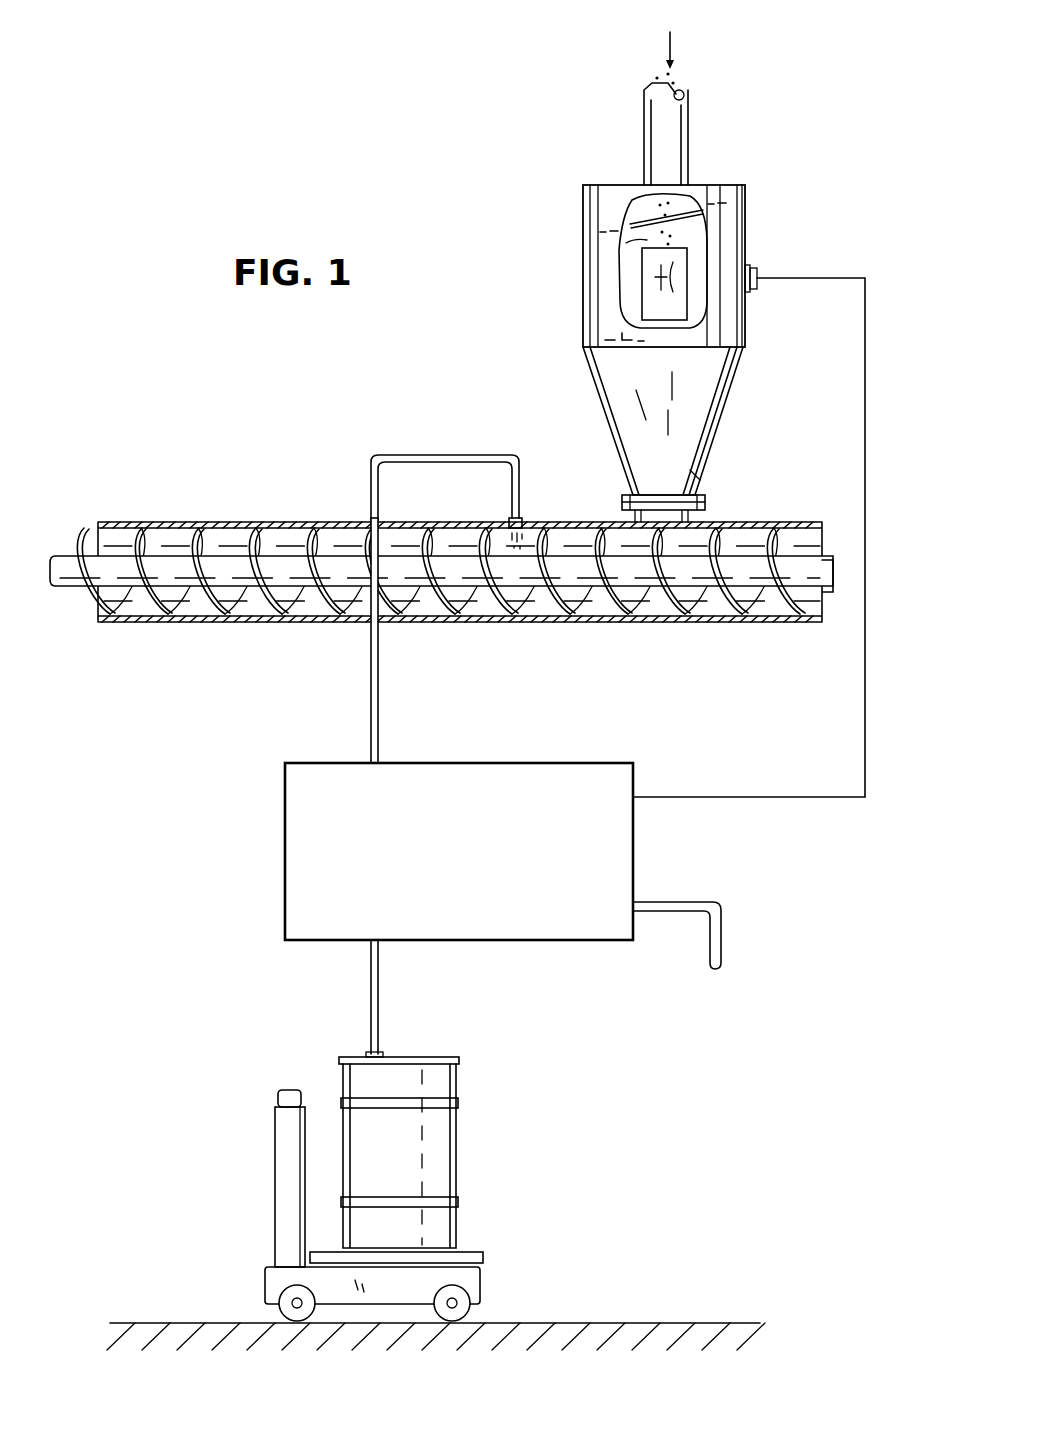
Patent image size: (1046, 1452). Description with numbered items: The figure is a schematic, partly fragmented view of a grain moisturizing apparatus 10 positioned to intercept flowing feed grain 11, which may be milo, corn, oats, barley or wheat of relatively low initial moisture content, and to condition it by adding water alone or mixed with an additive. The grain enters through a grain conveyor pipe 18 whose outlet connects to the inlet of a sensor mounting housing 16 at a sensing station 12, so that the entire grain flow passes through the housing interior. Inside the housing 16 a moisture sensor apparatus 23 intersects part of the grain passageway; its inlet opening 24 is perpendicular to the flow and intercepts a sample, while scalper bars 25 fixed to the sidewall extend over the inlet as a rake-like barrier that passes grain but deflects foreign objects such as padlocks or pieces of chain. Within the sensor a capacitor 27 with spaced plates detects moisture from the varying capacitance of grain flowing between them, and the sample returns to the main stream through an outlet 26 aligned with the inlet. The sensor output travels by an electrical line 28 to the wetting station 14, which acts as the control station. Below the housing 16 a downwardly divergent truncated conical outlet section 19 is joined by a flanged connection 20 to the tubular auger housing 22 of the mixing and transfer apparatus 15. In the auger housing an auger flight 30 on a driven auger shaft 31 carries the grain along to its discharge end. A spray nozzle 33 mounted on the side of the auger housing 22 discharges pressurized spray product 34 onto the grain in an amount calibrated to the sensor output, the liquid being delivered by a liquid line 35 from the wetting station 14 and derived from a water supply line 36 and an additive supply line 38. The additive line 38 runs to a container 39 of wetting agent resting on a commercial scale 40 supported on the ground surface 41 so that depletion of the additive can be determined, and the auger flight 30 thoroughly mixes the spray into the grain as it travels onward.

The grain moisturizing apparatus 10 is at (493, 240).
The feed grain 11 is at (677, 84).
The sensing station 12 is at (763, 228).
The wetting station 14 is at (252, 870).
The mixing and transfer apparatus 15 is at (308, 632).
The sensor mounting housing 16 is at (748, 322).
The grain conveyor pipe 18 is at (688, 138).
The truncated conical outlet section 19 is at (607, 428).
The flanged connection 20 is at (701, 497).
The auger housing 22 is at (676, 623).
The moisture sensor apparatus 23 is at (660, 283).
The inlet opening 24 is at (626, 243).
The scalper bars 25 is at (642, 203).
The outlet 26 is at (600, 340).
The capacitor 27 is at (645, 284).
The electrical line 28 is at (866, 366).
The auger flight 30 is at (238, 612).
The auger shaft 31 is at (229, 565).
The spray nozzle 33 is at (521, 517).
The pressurized spray product 34 is at (508, 534).
The liquid line 35 is at (379, 684).
The water supply line 36 is at (722, 908).
The additive supply line 38 is at (379, 990).
The container 39 is at (458, 1139).
The commercial scale 40 is at (276, 1165).
The ground surface 41 is at (600, 1325).